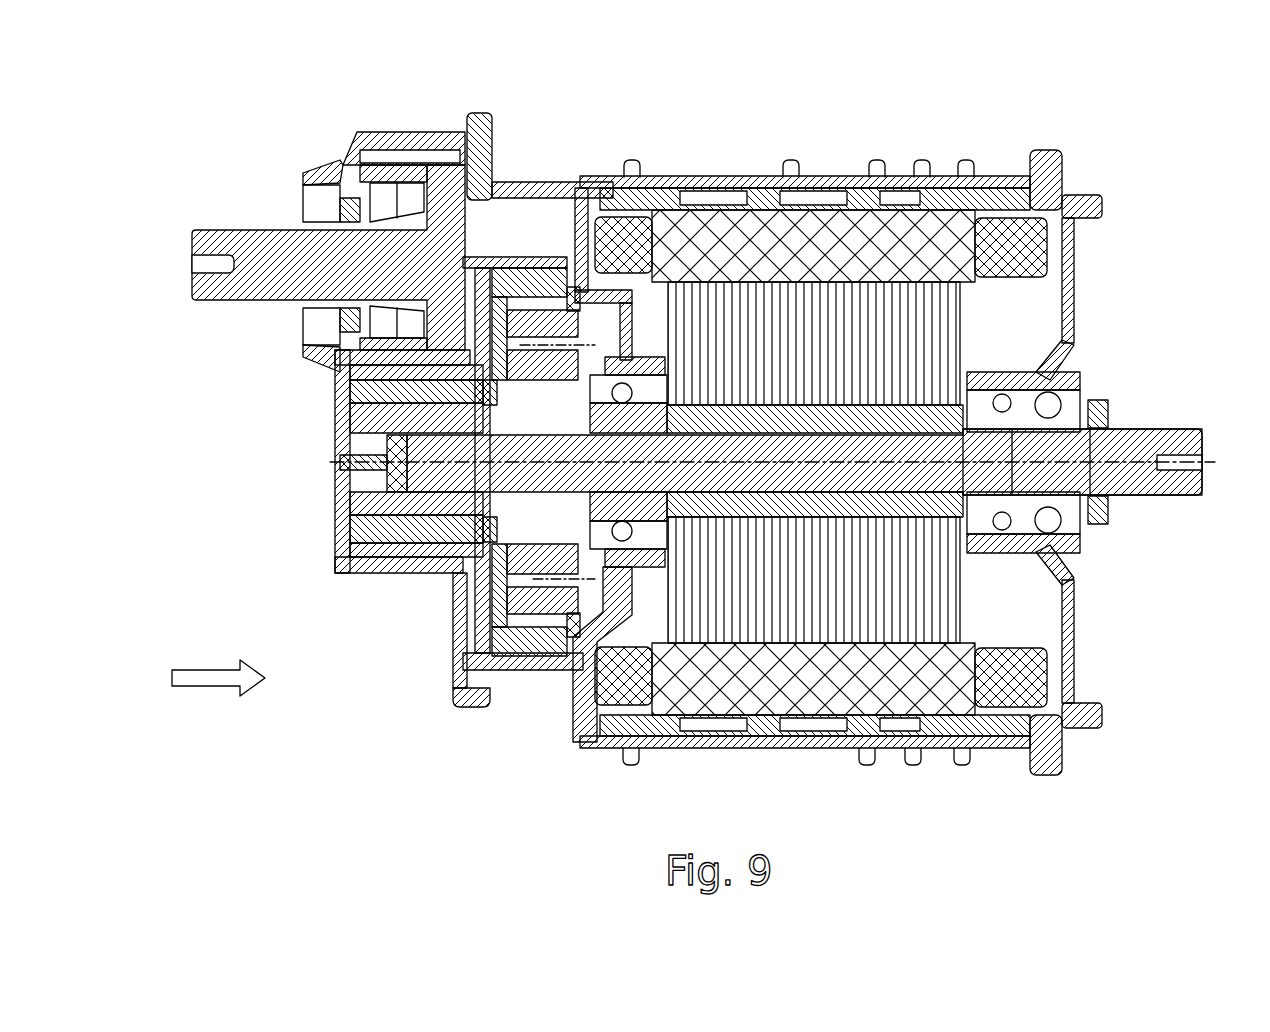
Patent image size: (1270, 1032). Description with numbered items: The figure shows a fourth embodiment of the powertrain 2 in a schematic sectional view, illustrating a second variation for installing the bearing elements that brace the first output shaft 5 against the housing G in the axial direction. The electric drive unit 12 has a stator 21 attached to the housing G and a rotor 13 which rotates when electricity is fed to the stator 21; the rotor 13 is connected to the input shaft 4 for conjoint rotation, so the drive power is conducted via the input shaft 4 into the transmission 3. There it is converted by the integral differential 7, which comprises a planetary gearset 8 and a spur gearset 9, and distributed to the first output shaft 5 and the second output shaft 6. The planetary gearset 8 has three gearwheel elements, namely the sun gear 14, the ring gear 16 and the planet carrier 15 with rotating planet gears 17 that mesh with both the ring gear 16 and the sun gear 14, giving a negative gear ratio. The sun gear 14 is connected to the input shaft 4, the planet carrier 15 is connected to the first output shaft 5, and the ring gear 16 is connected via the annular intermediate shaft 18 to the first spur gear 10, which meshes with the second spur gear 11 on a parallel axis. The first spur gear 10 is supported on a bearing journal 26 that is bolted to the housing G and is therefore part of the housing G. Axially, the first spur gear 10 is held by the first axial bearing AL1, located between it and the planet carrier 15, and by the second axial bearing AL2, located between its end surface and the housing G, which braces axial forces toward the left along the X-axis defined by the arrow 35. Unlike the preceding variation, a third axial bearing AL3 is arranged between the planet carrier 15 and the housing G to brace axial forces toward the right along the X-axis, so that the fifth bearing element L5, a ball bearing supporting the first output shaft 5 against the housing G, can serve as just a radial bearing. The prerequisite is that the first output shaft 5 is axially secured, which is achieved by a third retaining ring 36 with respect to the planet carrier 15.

The powertrain 2 is at (1107, 140).
The transmission 3 is at (505, 131).
The input shaft 4 is at (775, 410).
The first output shaft 5 is at (1148, 430).
The second output shaft 6 is at (224, 230).
The integral differential 7 is at (486, 224).
The planetary gearset 8 is at (551, 242).
The spur gearset 9 is at (414, 123).
The first spur gear 10 is at (337, 393).
The second spur gear 11 is at (347, 158).
The drive unit 12 is at (990, 295).
The rotor 13 is at (927, 345).
The sun gear 14 is at (556, 668).
The planet carrier 15 is at (480, 628).
The ring gear 16 is at (550, 672).
The planet gears 17 is at (515, 668).
The intermediate shaft 18 is at (387, 320).
The stator 21 is at (927, 243).
The bearing journal 26 is at (350, 438).
The arrow 35 is at (218, 688).
The third retaining ring 36 is at (345, 476).
The first axial bearing AL1 is at (480, 527).
The second axial bearing AL2 is at (337, 543).
The third axial bearing AL3 is at (600, 548).
The fifth bearing element L5 is at (1087, 470).
The housing G is at (373, 133).